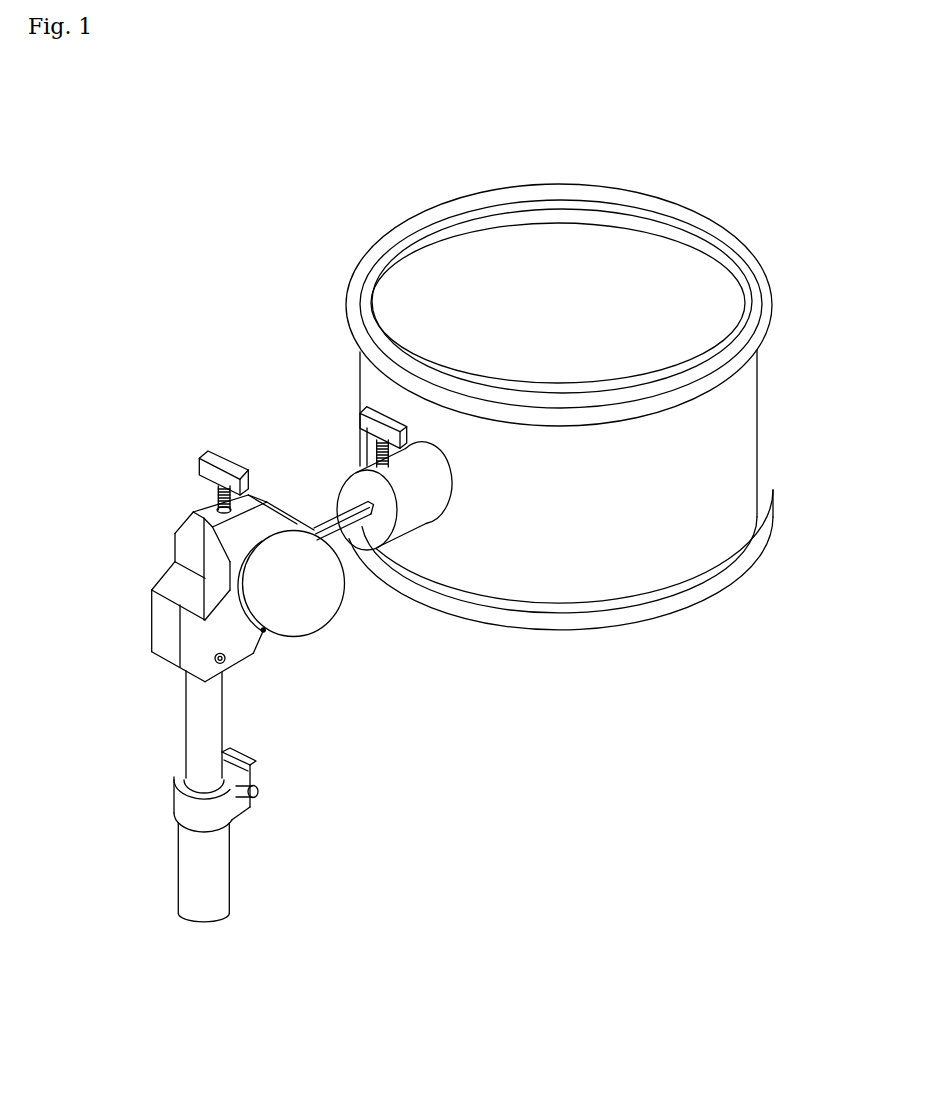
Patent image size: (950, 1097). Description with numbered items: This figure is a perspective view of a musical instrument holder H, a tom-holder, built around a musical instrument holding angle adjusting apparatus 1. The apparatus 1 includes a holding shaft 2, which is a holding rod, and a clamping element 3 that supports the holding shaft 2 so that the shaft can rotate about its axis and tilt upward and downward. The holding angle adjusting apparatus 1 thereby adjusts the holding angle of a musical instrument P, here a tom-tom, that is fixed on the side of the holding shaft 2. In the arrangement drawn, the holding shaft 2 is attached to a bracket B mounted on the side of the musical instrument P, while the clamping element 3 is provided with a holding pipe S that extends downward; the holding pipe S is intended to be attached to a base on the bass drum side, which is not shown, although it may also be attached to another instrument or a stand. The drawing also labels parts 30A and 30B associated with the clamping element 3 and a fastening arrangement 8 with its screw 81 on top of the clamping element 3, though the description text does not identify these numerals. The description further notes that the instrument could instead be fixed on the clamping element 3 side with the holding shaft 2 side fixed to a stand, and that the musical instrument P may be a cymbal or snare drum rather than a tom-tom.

The musical instrument holding angle adjusting apparatus 1 is at (166, 455).
The holding shaft 2 is at (325, 523).
The clamping element 3 is at (249, 540).
The first roller 30A is at (183, 543).
The second roller 30B is at (328, 603).
The fixing mechanism 8 is at (226, 443).
The fixing screw 81 is at (224, 465).
The bracket B is at (415, 519).
The musical instrument holder H is at (139, 608).
The musical instrument P is at (696, 211).
The holding pipe S is at (193, 735).